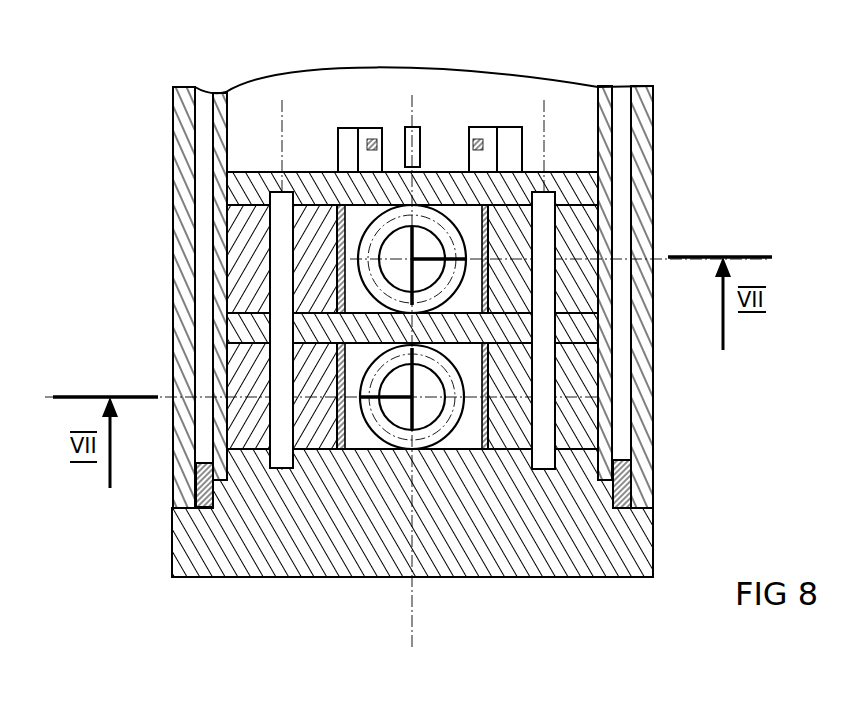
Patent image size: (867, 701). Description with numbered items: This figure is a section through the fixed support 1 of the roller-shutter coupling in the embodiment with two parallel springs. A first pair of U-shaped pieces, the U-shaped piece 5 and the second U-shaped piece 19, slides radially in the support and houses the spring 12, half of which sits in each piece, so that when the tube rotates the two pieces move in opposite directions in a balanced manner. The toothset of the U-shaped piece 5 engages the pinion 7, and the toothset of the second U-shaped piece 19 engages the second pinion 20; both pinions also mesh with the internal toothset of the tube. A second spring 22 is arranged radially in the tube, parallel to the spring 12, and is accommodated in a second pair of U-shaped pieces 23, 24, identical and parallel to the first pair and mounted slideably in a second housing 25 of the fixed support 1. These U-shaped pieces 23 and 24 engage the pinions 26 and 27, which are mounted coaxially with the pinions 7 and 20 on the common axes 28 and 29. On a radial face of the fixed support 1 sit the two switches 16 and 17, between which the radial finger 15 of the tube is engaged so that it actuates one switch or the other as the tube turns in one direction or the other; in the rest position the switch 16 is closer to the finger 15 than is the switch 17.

The fixed support 1 is at (573, 550).
The U-shaped piece 5 is at (342, 450).
The pinion 7 is at (240, 363).
The spring 12 is at (402, 440).
The radial finger 15 is at (418, 130).
The switch 16 is at (367, 137).
The switch 17 is at (487, 133).
The second U-shaped piece 19 is at (480, 445).
The second pinion 20 is at (582, 368).
The second spring 22 is at (458, 252).
The U-shaped piece 23 is at (343, 220).
The U-shaped piece 24 is at (488, 222).
The second housing 25 is at (345, 207).
The pinion 26 is at (238, 272).
The pinion 27 is at (570, 240).
The common axis 28 is at (278, 440).
The common axis 29 is at (542, 420).